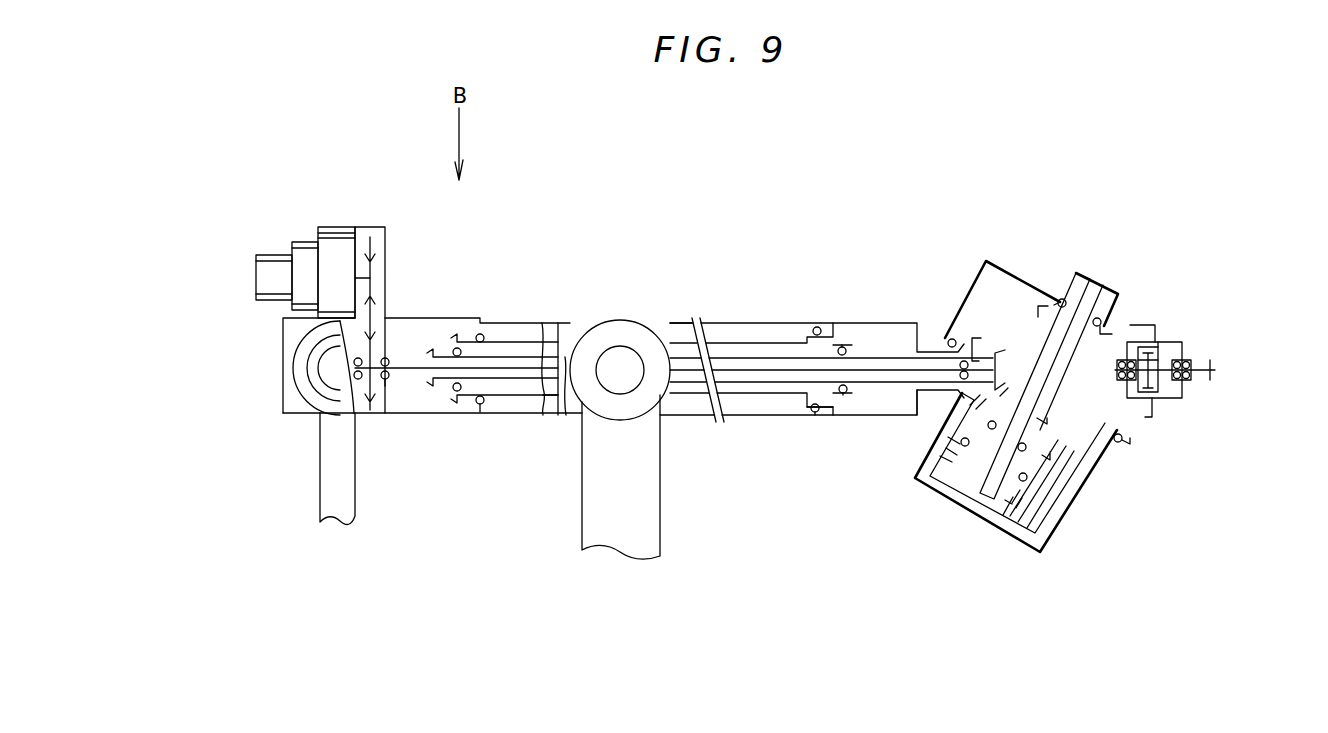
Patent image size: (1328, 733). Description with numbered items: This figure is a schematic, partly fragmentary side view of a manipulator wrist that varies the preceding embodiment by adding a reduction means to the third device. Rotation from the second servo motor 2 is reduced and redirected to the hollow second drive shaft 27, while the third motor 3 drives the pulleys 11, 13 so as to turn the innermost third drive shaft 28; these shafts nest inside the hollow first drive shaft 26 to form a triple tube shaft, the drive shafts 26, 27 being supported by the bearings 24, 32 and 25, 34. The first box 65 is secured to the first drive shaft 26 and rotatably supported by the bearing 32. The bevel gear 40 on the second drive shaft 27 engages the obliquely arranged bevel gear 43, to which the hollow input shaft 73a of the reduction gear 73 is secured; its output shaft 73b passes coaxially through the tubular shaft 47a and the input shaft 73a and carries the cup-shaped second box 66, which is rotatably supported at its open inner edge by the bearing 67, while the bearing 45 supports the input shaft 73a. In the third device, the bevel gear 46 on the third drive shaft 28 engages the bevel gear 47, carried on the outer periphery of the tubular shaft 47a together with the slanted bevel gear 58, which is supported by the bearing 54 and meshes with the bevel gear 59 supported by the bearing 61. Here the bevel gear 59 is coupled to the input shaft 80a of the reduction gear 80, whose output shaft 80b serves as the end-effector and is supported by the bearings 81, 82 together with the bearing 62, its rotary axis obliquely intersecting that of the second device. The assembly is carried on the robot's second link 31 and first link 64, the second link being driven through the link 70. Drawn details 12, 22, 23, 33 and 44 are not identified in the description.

The second servo motor 2 is at (290, 398).
The third motor 3 is at (335, 233).
The pulley 11 is at (385, 262).
The drive shaft 12 is at (372, 312).
The pulley 13 is at (389, 361).
The pivot pin 22 is at (359, 379).
The pivot pin 23 is at (362, 361).
The bearing 24 is at (483, 404).
The bearing 25 is at (457, 391).
The first drive shaft 26 is at (506, 343).
The second drive shaft 27 is at (532, 358).
The third drive shaft 28 is at (546, 415).
The second link 31 is at (664, 322).
The bearing 32 is at (814, 412).
The arm end 33 is at (935, 405).
The bearing 34 is at (847, 392).
The bevel gear 40 is at (976, 337).
The bevel gear 43 is at (1032, 452).
The bracket 44 is at (1000, 500).
The bearing 45 is at (1035, 510).
The bevel gear 46 is at (1000, 353).
The bevel gear 47 is at (1050, 422).
The tubular shaft 47a is at (1078, 300).
The bearing 54 is at (1060, 299).
The bevel gear 58 is at (1048, 303).
The bevel gear 59 is at (1118, 322).
The bearing 61 is at (1160, 360).
The bearing 62 is at (1158, 341).
The first link 64 is at (660, 522).
The first box 65 is at (830, 415).
The second box 66 is at (987, 264).
The bearing 67 is at (1122, 441).
The link 70 is at (320, 487).
The reduction gear 73 is at (955, 495).
The input shaft 73a is at (1040, 485).
The output shaft 73b is at (1090, 293).
The reduction gear 80 is at (1190, 358).
The input shaft 80a is at (1160, 399).
The output shaft 80b is at (1210, 372).
The bearing 81 is at (1192, 372).
The bearing 82 is at (1186, 384).